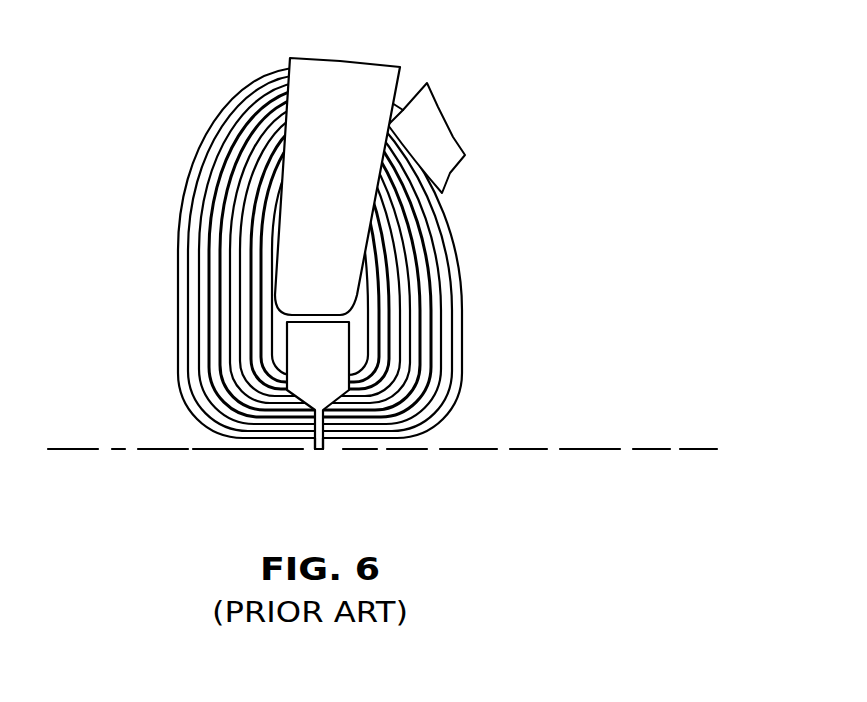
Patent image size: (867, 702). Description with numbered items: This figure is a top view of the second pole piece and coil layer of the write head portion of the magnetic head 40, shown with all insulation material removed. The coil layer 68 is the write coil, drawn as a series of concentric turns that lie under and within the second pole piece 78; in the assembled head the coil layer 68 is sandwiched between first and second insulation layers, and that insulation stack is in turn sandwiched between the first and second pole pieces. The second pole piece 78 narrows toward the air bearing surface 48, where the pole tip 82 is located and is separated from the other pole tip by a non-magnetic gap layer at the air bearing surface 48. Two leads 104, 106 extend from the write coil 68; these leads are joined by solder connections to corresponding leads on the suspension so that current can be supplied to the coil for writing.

The magnetic head 40 is at (407, 286).
The air bearing surface 48 is at (634, 452).
The coil layer 68 is at (430, 286).
The second pole piece 78 is at (335, 371).
The first pole tip 82 is at (318, 450).
The lead 104 is at (346, 185).
The lead 106 is at (440, 105).